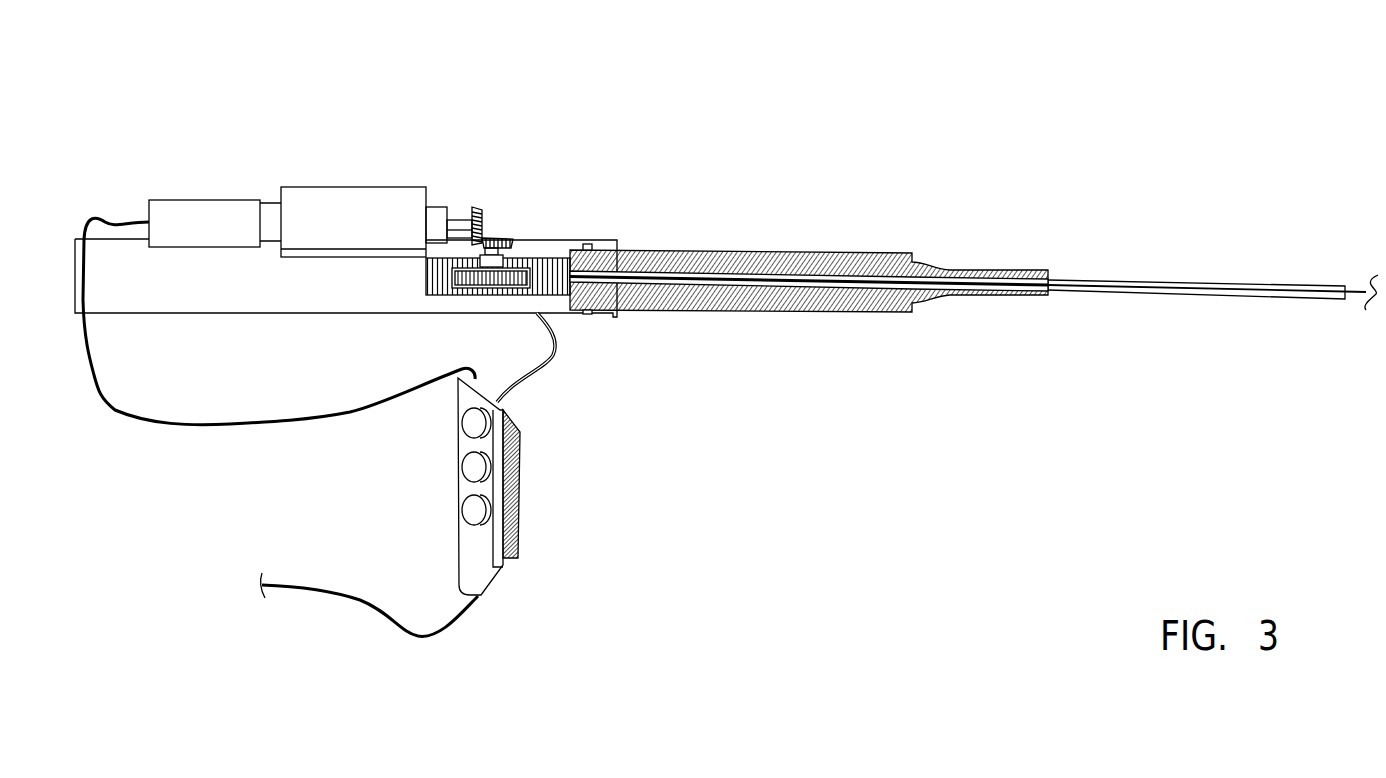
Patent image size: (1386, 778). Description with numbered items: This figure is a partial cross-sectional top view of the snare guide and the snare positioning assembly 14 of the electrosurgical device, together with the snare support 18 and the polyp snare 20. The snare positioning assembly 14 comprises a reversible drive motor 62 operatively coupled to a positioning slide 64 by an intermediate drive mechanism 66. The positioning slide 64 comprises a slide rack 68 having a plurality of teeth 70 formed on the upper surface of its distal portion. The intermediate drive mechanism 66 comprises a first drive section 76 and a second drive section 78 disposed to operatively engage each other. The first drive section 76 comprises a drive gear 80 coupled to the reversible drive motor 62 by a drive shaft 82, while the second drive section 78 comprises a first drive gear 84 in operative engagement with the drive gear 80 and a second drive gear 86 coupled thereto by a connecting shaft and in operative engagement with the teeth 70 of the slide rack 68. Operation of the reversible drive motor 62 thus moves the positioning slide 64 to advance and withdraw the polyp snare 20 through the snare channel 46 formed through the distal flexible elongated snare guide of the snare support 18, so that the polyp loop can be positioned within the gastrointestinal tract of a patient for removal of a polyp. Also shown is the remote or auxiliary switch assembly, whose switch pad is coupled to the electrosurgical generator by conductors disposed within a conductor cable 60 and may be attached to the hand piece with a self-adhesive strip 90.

The snare positioning assembly 14 is at (643, 157).
The snare support 18 is at (804, 209).
The polyp snare 20 is at (1351, 278).
The snare channel 46 is at (880, 278).
The conductor cable 60 is at (320, 587).
The reversible drive motor 62 is at (197, 200).
The positioning slide 64 is at (679, 223).
The intermediate drive mechanism 66 is at (445, 142).
The slide rack 68 is at (419, 293).
The teeth 70 is at (430, 289).
The first drive section 76 is at (430, 173).
The second drive section 78 is at (560, 238).
The drive gear 80 is at (478, 210).
The drive shaft 82 is at (455, 220).
The first drive gear 84 is at (493, 238).
The second drive gear 86 is at (481, 275).
The self-adhesive strip 90 is at (520, 512).